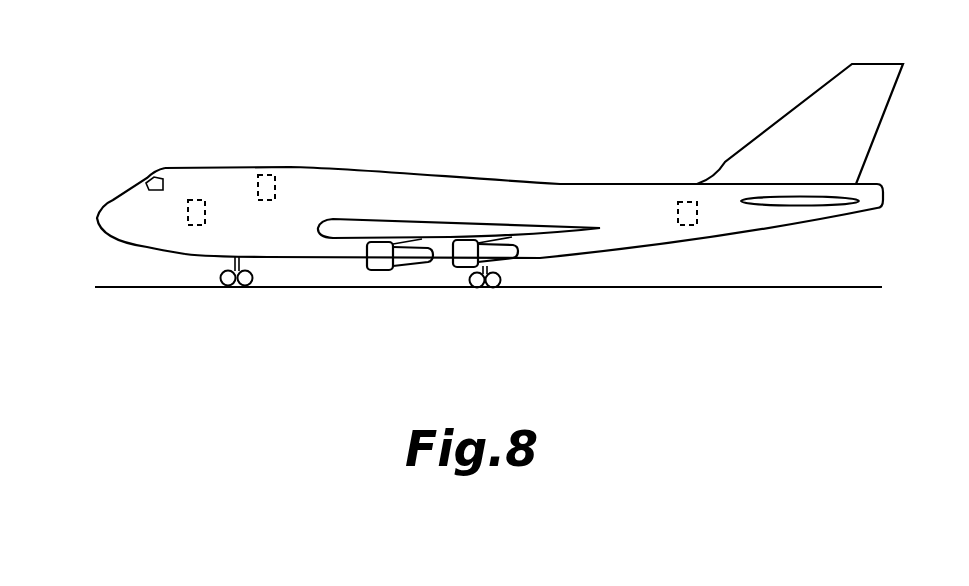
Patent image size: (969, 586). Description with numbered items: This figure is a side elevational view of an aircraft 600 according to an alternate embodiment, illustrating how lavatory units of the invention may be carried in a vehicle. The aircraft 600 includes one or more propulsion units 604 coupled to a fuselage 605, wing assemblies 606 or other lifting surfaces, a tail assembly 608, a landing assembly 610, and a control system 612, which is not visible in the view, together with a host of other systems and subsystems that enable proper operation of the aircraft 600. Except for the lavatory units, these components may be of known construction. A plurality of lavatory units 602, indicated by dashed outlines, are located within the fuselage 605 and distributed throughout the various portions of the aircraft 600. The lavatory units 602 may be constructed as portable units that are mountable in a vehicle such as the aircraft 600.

The aircraft 600 is at (186, 90).
The lavatory units 602 is at (257, 187).
The propulsion units 604 is at (465, 257).
The fuselage 605 is at (570, 188).
The wing assemblies 606 is at (352, 228).
The tail assembly 608 is at (784, 140).
The landing assembly 610 is at (497, 287).
The control system 612 is at (108, 181).